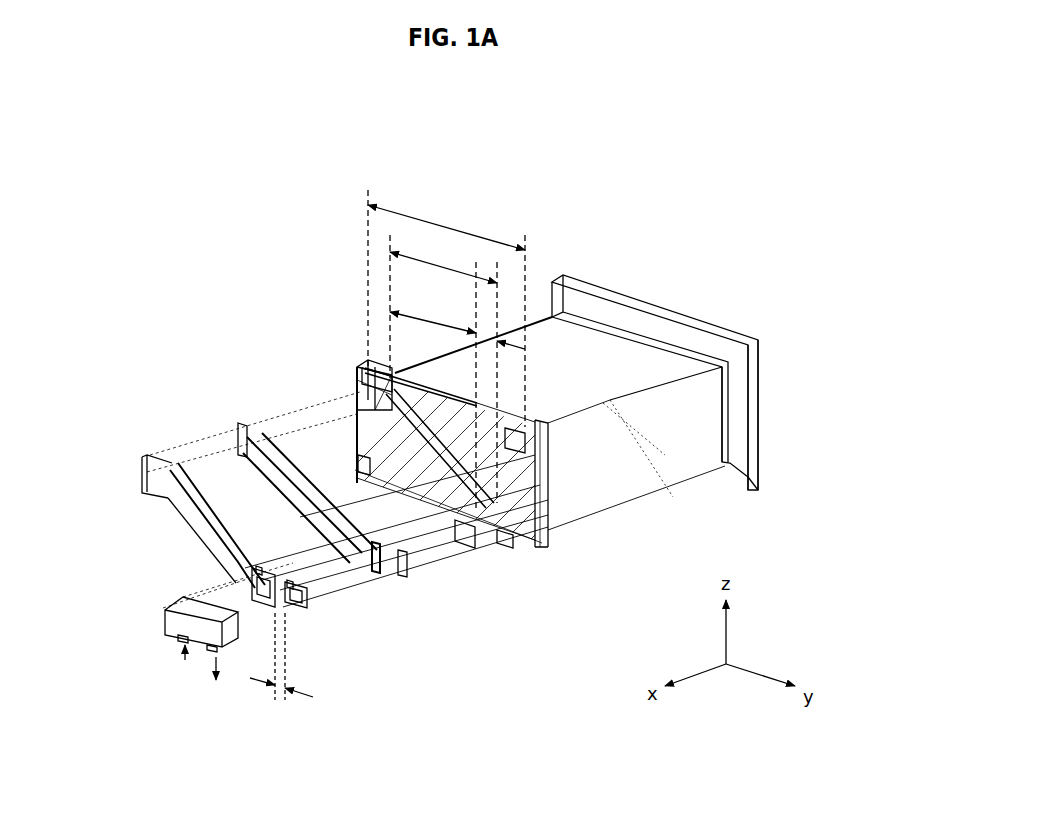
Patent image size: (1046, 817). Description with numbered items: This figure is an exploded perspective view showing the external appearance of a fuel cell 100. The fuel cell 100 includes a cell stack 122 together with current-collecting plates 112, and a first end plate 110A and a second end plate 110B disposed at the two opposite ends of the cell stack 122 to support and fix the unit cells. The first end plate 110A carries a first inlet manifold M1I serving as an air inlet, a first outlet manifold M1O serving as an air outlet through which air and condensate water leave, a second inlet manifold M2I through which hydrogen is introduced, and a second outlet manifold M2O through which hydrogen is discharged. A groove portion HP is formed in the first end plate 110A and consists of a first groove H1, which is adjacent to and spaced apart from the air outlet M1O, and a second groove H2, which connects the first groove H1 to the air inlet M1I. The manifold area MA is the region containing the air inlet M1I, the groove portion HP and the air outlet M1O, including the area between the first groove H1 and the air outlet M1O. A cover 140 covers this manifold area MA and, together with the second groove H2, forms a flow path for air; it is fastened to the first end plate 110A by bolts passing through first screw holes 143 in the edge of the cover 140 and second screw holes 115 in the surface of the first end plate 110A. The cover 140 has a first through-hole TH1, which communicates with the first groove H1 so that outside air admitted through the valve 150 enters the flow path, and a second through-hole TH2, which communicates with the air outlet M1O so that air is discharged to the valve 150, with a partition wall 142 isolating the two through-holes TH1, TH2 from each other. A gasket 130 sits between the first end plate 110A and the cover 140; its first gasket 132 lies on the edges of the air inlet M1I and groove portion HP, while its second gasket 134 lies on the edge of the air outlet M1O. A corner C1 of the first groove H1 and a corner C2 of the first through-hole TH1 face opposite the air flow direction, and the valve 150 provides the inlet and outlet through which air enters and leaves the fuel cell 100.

The fuel cell 100 is at (757, 180).
The first end plate 110A is at (542, 548).
The second end plate 110B is at (757, 493).
The current-collecting plate 112 is at (732, 480).
The second screw hole 115 is at (357, 372).
The cell stack 122 is at (618, 498).
The gasket 130 is at (375, 628).
The first gasket 132 is at (375, 578).
The second gasket 134 is at (400, 588).
The cover 140 is at (310, 617).
The partition wall 142 is at (281, 675).
The first screw hole 143 is at (147, 453).
The valve 150 is at (165, 620).
The first inlet manifold M1I is at (362, 368).
The first outlet manifold M1O is at (507, 550).
The second inlet manifold M2I is at (527, 450).
The second outlet manifold M2O is at (358, 465).
The first through-hole TH1 is at (256, 568).
The second through-hole TH2 is at (287, 583).
The corner of the first groove C1 is at (468, 550).
The corner of the first through-hole C2 is at (270, 607).
The manifold area MA is at (446, 308).
The groove portion HP is at (443, 369).
The first groove H1 is at (490, 345).
The second groove H2 is at (433, 386).